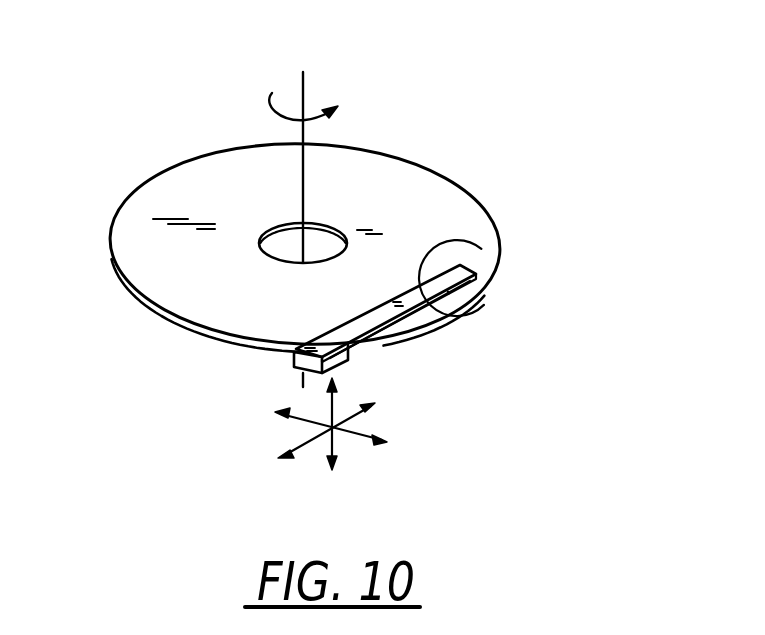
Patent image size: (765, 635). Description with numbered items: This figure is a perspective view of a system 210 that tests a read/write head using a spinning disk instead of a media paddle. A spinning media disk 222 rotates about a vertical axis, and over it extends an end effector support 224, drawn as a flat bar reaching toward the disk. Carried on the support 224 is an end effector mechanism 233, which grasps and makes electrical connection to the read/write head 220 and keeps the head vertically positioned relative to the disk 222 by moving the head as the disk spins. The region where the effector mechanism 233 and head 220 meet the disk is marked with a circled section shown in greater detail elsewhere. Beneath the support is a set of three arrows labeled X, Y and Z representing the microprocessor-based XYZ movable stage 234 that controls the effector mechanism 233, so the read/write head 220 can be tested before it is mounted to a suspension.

The system 210 is at (168, 98).
The spinning media disk 222 is at (165, 220).
The end effector support 224 is at (383, 308).
The read/write head 220 is at (492, 283).
The end effector mechanism 233 is at (480, 263).
The microprocessor-based XYZ movable stage 234 is at (387, 477).